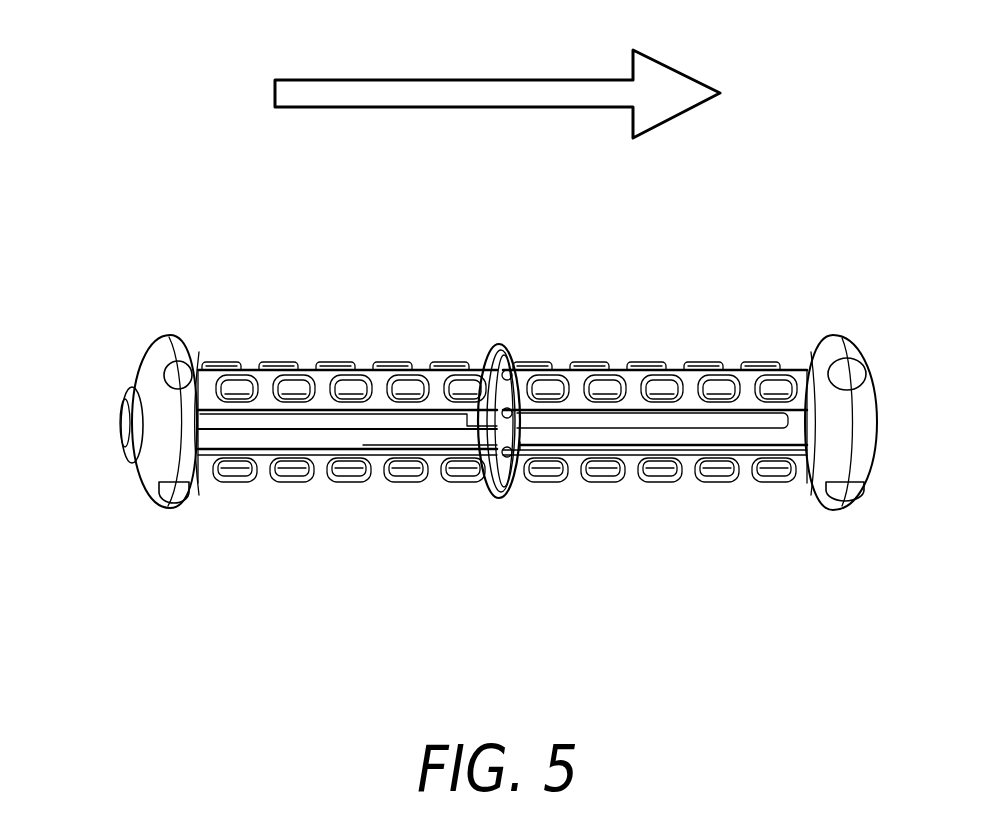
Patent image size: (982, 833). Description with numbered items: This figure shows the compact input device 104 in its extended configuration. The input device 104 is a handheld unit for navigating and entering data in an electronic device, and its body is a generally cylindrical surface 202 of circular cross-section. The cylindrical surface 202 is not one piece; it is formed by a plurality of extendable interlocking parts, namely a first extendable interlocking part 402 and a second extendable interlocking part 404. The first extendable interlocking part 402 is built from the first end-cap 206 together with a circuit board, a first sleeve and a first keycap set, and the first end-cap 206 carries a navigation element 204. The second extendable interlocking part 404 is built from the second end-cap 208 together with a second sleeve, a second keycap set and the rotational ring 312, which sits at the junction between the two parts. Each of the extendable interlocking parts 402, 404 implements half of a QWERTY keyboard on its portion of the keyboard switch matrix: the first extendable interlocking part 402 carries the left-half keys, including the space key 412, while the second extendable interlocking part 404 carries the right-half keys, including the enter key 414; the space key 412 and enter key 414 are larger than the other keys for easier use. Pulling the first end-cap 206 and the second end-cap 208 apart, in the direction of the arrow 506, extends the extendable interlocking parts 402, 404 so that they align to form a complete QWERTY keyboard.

The compact input device 104 is at (77, 102).
The cylindrical surface 202 is at (320, 430).
The navigation element 204 is at (124, 422).
The first end-cap 206 is at (125, 394).
The second end-cap 208 is at (864, 397).
The rotational ring 312 is at (497, 345).
The first extendable interlocking part 402 is at (310, 473).
The second extendable interlocking part 404 is at (685, 473).
The space key 412 is at (397, 366).
The enter key 414 is at (597, 366).
The arrow 506 is at (455, 80).